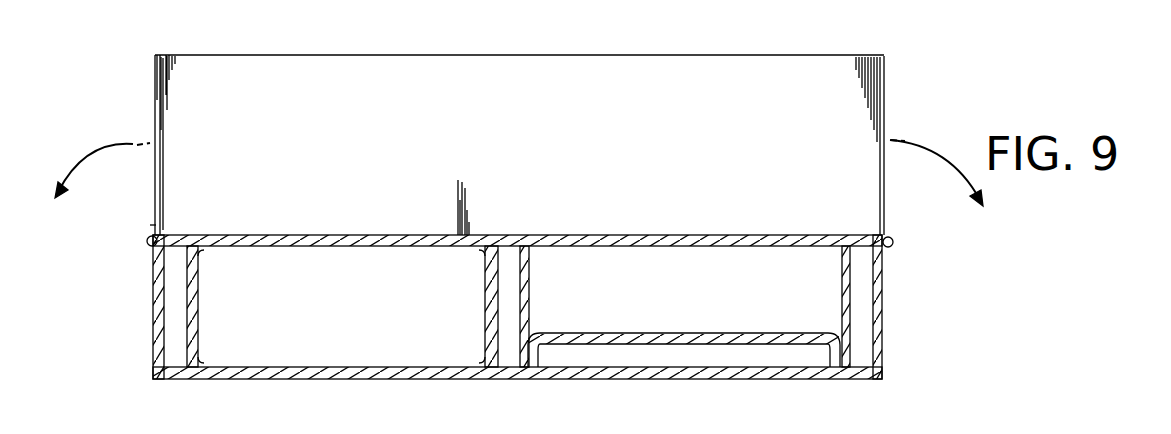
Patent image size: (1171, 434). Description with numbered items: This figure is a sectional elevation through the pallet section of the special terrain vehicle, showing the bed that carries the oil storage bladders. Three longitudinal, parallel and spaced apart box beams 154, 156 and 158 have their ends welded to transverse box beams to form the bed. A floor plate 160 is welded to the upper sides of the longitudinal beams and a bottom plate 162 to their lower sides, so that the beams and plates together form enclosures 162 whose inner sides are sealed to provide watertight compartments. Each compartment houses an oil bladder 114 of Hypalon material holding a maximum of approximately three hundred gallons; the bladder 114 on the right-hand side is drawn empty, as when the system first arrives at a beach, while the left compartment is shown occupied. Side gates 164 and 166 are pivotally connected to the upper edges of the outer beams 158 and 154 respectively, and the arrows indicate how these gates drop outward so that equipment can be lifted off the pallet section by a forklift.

The oil bladder 114 is at (346, 311).
The longitudinal box beam 154 is at (884, 320).
The longitudinal box beam 156 is at (530, 298).
The longitudinal box beam 158 is at (155, 312).
The floor plate 160 is at (398, 235).
The bottom plate / enclosure 162 is at (200, 380).
The side gate 164 is at (165, 100).
The side gate 166 is at (884, 93).